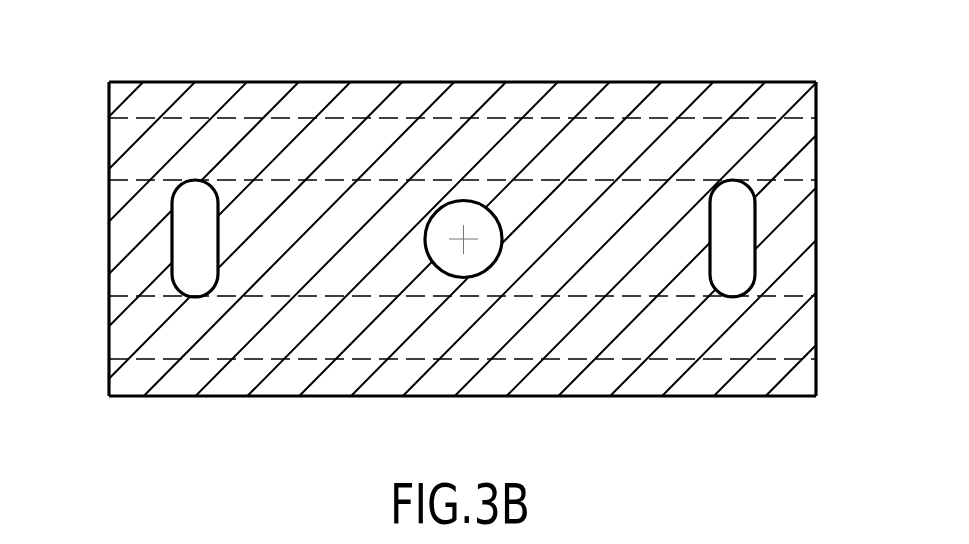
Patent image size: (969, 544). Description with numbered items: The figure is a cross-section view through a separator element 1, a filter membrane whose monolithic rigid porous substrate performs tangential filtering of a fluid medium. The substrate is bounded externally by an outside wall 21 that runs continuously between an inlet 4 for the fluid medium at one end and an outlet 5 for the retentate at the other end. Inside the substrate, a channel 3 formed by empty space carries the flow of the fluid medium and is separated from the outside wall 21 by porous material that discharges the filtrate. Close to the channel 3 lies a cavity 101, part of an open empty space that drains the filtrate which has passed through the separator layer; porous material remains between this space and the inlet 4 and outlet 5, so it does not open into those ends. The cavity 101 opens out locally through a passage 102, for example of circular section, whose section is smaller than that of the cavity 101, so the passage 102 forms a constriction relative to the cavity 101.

The separator element 1 is at (816, 49).
The channel 3 is at (244, 120).
The inlet 4 is at (100, 334).
The outlet 5 is at (828, 333).
The outside wall 21 is at (647, 405).
The cavity 101 is at (177, 235).
The passage 102 is at (454, 206).